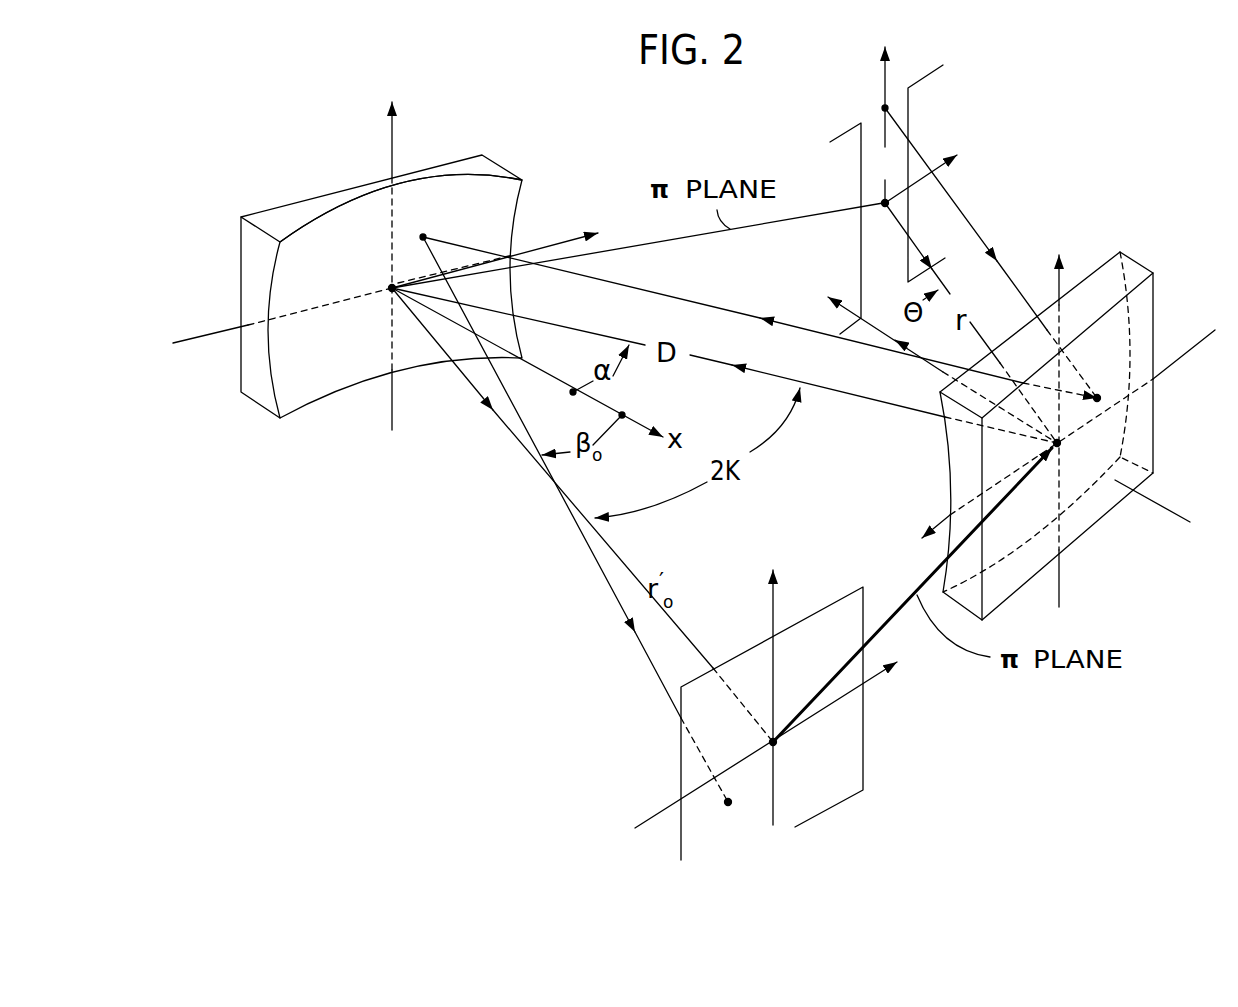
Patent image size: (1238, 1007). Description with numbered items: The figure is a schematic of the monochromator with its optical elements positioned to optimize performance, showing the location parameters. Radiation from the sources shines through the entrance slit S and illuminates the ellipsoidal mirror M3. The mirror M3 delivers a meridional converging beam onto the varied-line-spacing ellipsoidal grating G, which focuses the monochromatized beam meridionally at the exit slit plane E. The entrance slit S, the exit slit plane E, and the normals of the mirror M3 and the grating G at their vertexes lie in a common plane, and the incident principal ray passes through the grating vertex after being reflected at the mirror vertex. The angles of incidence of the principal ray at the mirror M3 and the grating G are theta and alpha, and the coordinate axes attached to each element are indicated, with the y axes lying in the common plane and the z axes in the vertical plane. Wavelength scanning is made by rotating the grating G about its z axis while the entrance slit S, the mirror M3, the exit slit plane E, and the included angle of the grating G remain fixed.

The varied-line-spacing ellipsoidal grating G is at (397, 246).
The entrance slit S is at (968, 78).
The ellipsoidal mirror M3 is at (1047, 423).
The exit slit plane E is at (643, 718).